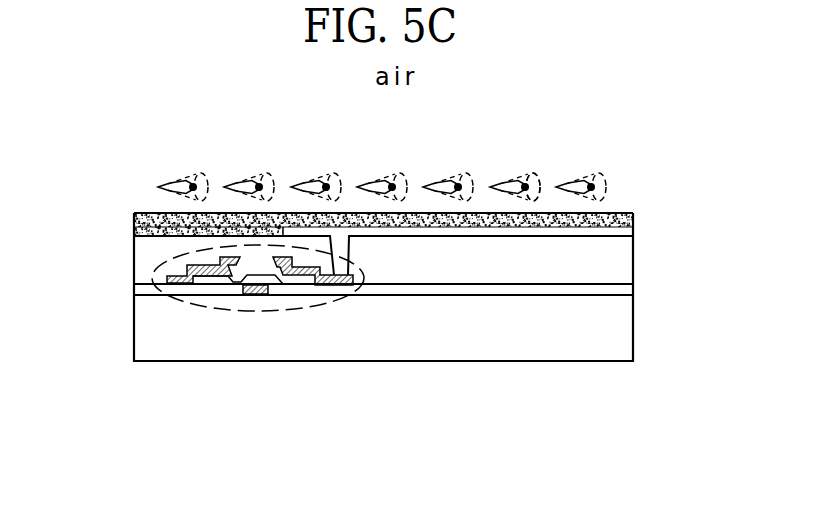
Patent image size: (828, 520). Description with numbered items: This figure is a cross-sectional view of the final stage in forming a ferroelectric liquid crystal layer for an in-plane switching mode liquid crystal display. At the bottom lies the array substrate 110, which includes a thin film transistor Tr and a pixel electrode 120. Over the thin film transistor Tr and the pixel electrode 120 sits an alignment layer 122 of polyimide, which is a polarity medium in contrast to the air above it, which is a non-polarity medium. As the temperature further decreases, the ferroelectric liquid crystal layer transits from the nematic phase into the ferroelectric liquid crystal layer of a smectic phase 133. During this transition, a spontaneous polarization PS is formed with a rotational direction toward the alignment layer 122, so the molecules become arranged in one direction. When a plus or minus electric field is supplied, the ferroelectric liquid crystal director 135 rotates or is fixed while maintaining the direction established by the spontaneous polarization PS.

The array substrate 110 is at (637, 225).
The pixel electrode 120 is at (471, 228).
The alignment layer 122 is at (342, 212).
The ferroelectric liquid crystal layer of a smectic phase (SmC*) 133 is at (579, 160).
The ferroelectric liquid crystal director 135 is at (177, 182).
The spontaneous polarization PS is at (528, 184).
The thin film transistor Tr is at (258, 310).